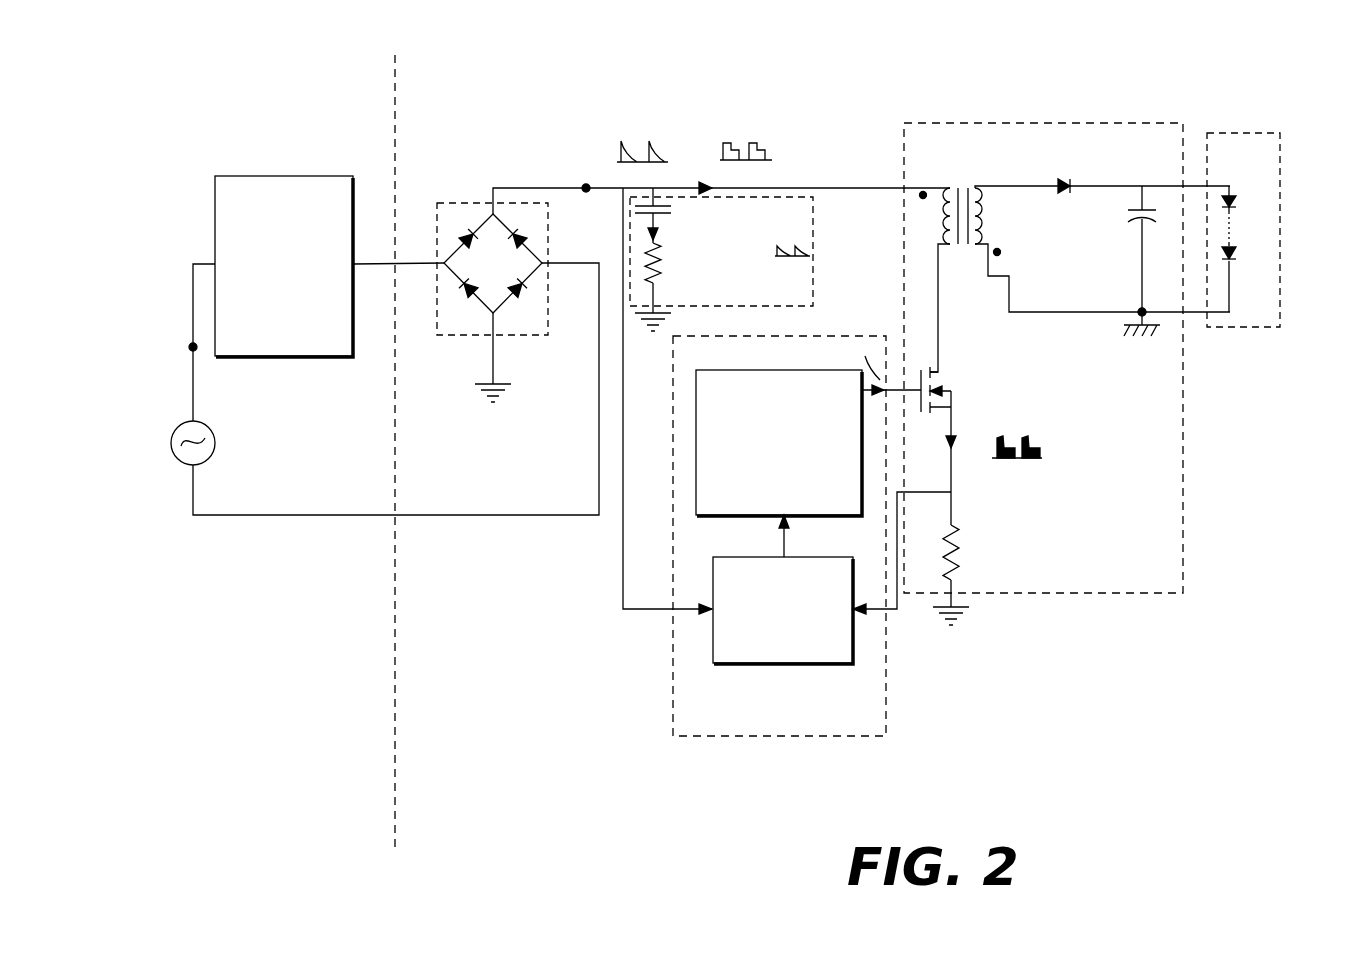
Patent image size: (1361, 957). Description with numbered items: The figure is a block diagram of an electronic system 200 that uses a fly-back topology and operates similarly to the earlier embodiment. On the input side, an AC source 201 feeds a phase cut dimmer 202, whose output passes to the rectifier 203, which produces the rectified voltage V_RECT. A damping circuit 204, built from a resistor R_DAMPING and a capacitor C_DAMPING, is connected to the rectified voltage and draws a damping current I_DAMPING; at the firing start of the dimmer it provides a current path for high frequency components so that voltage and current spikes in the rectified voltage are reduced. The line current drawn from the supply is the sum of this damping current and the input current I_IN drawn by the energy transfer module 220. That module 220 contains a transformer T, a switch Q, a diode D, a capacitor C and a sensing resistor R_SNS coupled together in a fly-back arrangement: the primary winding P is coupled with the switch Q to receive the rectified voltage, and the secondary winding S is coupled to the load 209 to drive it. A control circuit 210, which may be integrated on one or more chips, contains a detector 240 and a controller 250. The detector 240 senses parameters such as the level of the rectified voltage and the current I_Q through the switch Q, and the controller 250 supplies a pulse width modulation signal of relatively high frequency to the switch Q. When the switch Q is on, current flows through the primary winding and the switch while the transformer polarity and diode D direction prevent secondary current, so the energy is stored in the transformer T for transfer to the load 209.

The electronic system 200 is at (596, 772).
The AC voltage source 201 is at (184, 427).
The phase cut dimmer (TRIAC) 202 is at (329, 266).
The rectifier 203 is at (457, 198).
The damping circuit 204 is at (815, 222).
The load 209 is at (1285, 247).
The control circuit 210 is at (748, 748).
The energy transfer module 220 is at (1094, 124).
The detector 240 is at (783, 610).
The controller 250 is at (779, 443).